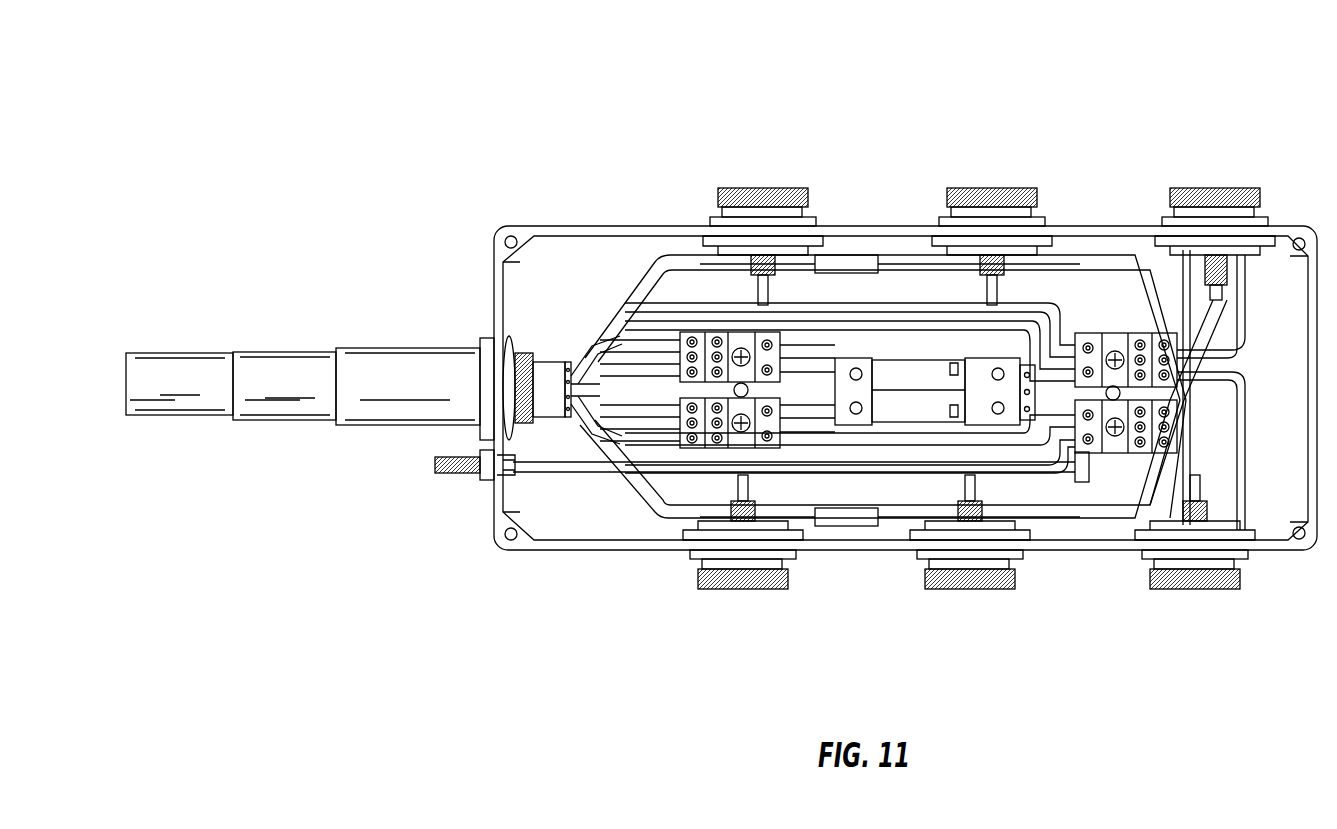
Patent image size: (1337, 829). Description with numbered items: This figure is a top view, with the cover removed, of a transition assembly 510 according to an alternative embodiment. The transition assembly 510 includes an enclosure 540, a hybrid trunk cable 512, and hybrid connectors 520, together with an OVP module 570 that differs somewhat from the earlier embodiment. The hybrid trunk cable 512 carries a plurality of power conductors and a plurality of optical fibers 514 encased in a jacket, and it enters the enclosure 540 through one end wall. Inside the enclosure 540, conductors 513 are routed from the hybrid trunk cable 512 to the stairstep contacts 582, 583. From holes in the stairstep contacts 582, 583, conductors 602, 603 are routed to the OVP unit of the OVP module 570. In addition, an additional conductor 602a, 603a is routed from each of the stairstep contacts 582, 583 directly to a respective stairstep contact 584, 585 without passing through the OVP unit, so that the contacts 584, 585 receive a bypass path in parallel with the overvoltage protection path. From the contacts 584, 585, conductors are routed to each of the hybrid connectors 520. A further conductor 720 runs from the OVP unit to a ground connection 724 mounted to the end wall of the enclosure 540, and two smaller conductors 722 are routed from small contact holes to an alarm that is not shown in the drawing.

The transition assembly 510 is at (1126, 90).
The hybrid trunk cable 512 is at (232, 437).
The conductors 513 is at (584, 355).
The optical fibers 514 is at (653, 278).
The hybrid connectors 520 is at (952, 593).
The enclosure 540 is at (1078, 226).
The OVP module 570 is at (1045, 496).
The stairstep contact 582 is at (738, 336).
The stairstep contact 583 is at (735, 440).
The stairstep contact 584 is at (1112, 333).
The stairstep contact 585 is at (1117, 443).
The conductor 602 is at (823, 367).
The additional conductor 602a is at (888, 345).
The conductor 603 is at (800, 410).
The additional conductor 603a is at (900, 437).
The conductor 720 is at (568, 480).
The smaller conductors 722 is at (933, 305).
The ground connection 724 is at (480, 473).